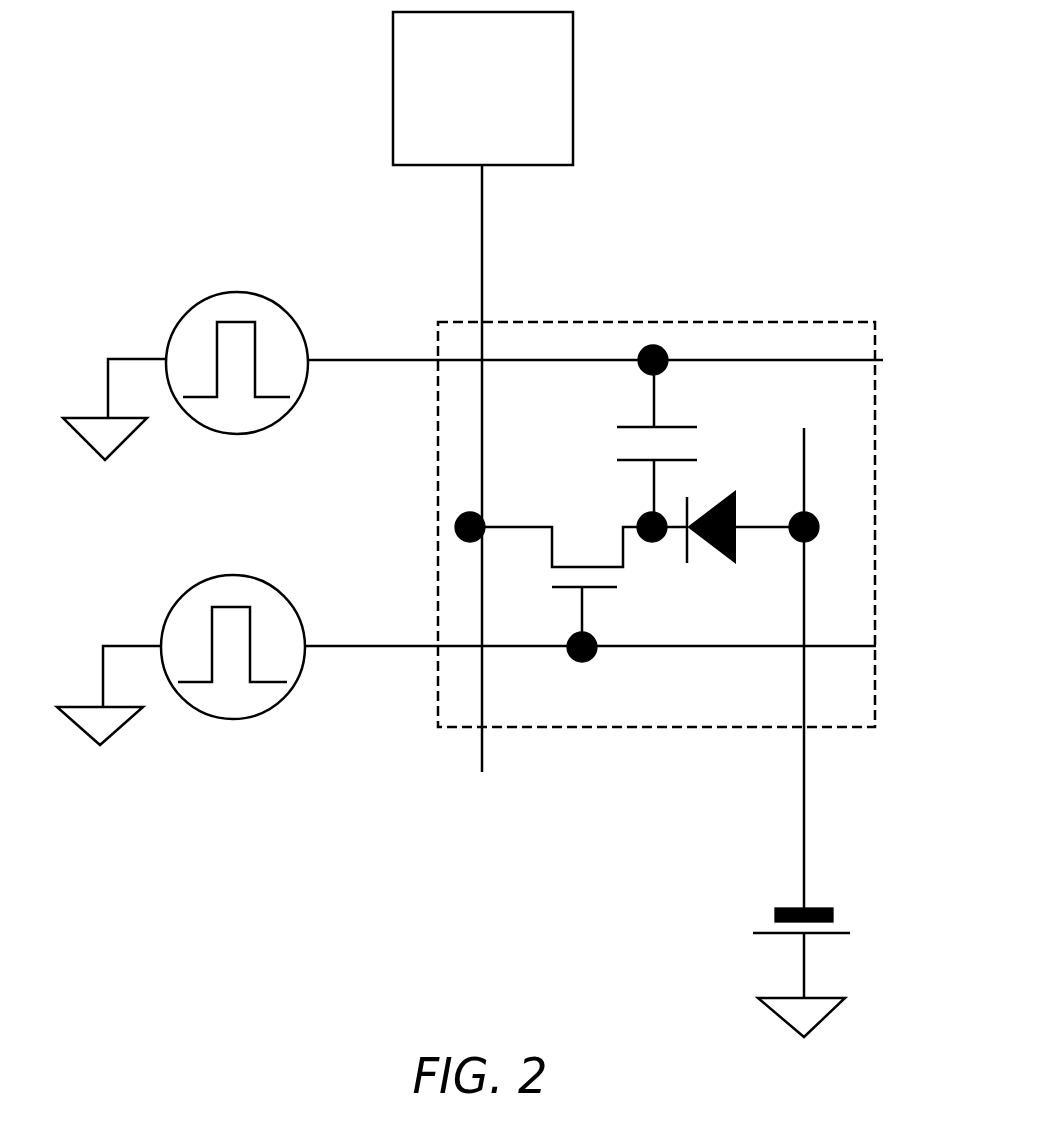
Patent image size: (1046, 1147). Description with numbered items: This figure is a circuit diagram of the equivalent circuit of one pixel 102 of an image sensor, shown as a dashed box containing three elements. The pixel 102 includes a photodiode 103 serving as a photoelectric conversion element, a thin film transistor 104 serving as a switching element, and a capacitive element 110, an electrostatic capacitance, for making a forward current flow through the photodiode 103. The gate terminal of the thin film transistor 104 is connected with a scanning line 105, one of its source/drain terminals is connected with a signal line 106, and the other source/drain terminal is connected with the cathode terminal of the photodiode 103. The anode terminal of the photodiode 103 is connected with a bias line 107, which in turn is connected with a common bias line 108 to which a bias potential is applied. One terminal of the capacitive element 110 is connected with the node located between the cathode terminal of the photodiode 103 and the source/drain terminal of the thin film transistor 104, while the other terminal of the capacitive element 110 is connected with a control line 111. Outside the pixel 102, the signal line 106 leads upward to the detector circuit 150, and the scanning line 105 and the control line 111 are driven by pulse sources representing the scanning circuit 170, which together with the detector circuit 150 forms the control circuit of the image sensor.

The detector circuit 150 is at (452, 147).
The pixel 102 is at (876, 545).
The scanning circuit 170 is at (306, 340).
The signal line 106 is at (482, 250).
The control line 111 is at (522, 360).
The scanning line 105 is at (393, 646).
The capacitive element 110 is at (677, 427).
The thin film transistor 104 is at (567, 587).
The photodiode 103 is at (713, 500).
The bias line 107 is at (848, 732).
The common bias line 108 is at (804, 843).